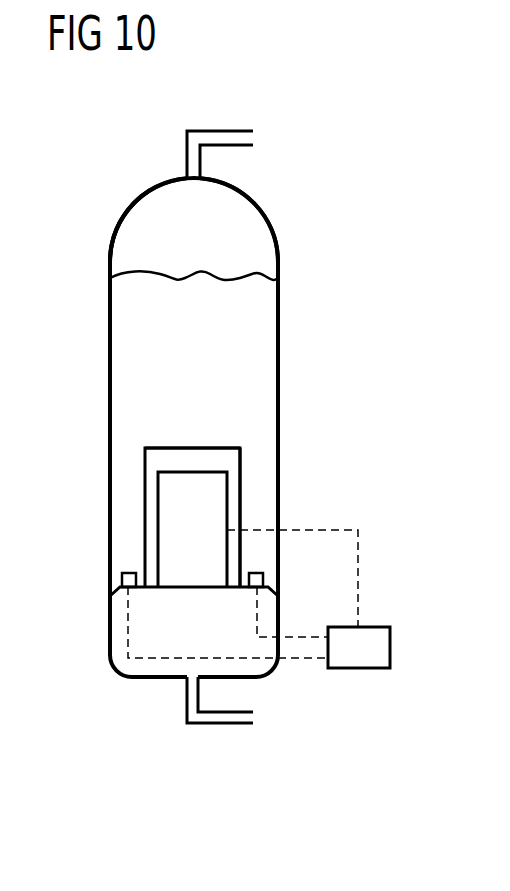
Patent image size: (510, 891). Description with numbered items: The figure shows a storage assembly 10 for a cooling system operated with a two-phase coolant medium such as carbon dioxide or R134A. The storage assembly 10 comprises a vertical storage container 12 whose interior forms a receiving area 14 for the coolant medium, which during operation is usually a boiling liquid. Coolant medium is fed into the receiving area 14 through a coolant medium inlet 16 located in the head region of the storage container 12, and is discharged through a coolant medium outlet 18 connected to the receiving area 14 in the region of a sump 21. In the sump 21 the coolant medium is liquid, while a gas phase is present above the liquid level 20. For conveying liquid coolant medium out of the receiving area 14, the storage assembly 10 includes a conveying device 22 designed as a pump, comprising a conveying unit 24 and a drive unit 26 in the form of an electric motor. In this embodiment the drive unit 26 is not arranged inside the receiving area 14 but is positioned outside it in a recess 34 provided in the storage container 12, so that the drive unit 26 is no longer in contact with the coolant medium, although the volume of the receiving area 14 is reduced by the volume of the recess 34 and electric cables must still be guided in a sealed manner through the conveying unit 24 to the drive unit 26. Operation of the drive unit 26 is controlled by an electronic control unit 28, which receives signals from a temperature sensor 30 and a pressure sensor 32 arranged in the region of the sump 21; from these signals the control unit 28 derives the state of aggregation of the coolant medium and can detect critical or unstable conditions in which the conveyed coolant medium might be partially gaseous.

The storage assembly 10 is at (310, 236).
The storage container 12 is at (280, 322).
The receiving area 14 is at (112, 250).
The coolant medium inlet 16 is at (236, 134).
The coolant medium outlet 18 is at (224, 720).
The liquid level 20 is at (196, 284).
The sump 21 is at (118, 550).
The conveying device 22 is at (248, 496).
The conveying unit 24 is at (120, 653).
The drive unit 26 is at (193, 483).
The electronic control unit 28 is at (360, 668).
The temperature sensor 30 is at (120, 580).
The pressure sensor 32 is at (266, 579).
The recess 34 is at (168, 458).